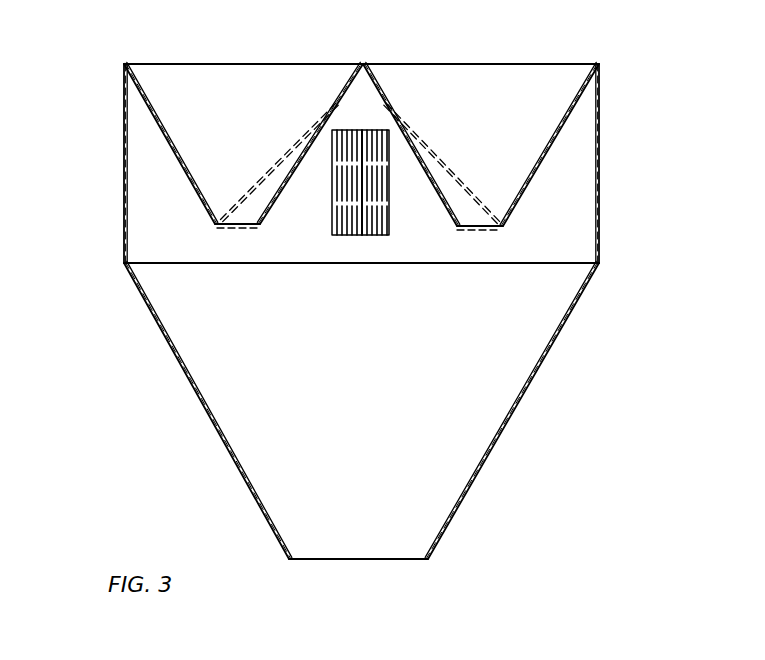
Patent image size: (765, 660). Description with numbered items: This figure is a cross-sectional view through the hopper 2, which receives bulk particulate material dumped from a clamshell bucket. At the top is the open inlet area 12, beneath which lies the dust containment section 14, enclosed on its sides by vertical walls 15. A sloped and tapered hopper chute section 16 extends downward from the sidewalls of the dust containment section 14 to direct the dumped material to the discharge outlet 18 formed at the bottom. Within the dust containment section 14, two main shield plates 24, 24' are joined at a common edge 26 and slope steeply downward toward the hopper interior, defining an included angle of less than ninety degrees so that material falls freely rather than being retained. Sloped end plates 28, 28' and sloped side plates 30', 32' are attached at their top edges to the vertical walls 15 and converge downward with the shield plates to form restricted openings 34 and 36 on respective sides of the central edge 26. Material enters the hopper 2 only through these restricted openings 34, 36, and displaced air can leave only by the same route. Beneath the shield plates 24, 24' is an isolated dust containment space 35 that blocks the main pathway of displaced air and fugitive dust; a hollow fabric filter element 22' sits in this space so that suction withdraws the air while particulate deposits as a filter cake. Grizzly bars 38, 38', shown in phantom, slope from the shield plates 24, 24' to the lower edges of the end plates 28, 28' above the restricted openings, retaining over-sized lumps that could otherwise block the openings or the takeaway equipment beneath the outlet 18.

The hopper 2 is at (567, 338).
The open inlet area 12 is at (171, 265).
The dust containment section 14 is at (603, 197).
The vertical wall 15 is at (124, 200).
The hopper chute section 16 is at (511, 411).
The discharge outlet 18 is at (395, 560).
The hollow fabric filter element 22' is at (371, 219).
The main shield plate 24 is at (443, 157).
The main shield plate 24' is at (278, 154).
The common edge 26 is at (363, 64).
The sloped end plate 28 is at (580, 144).
The sloped end plate 28' is at (137, 143).
The sloped side plate 30' is at (519, 56).
The sloped side plate 32' is at (264, 54).
The restricted opening 34 is at (481, 232).
The dust containment space 35 is at (318, 220).
The restricted opening 36 is at (218, 230).
The grizzly bars 38 is at (487, 162).
The grizzly bars 38' is at (226, 165).